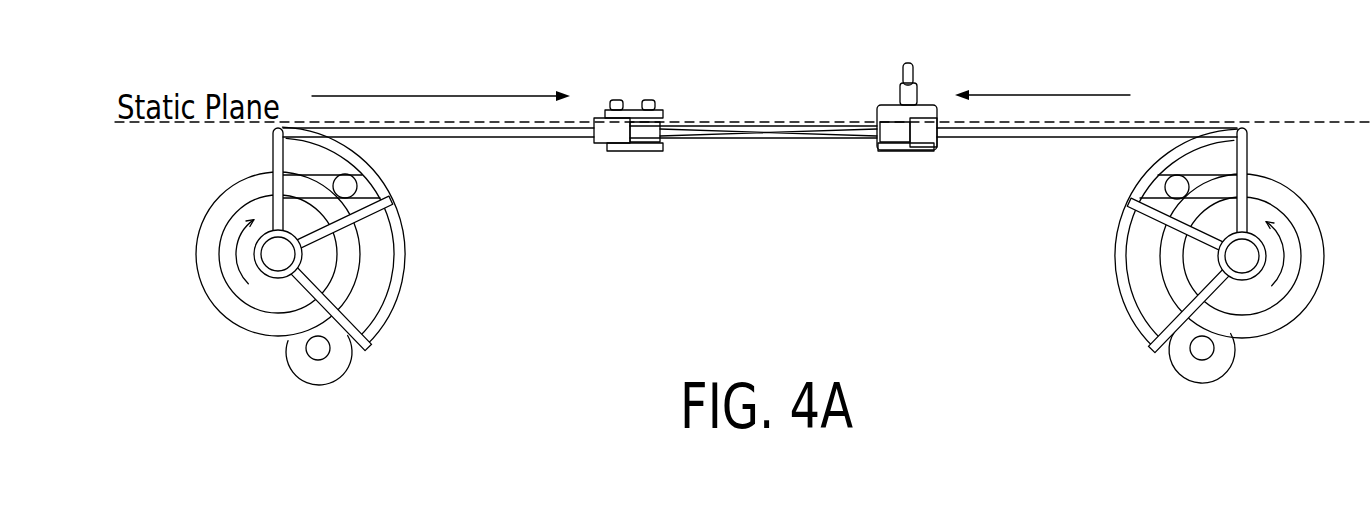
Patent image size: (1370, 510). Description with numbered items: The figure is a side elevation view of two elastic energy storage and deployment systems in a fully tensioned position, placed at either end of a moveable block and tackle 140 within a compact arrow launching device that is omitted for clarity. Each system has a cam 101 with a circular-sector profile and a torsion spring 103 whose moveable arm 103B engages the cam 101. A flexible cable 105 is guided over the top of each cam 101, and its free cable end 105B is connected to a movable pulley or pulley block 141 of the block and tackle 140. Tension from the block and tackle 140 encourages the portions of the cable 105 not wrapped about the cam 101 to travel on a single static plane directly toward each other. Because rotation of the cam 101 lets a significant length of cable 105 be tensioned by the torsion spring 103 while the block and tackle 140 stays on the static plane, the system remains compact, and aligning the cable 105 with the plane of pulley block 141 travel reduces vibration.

The cam 101 is at (405, 277).
The torsion spring 103 is at (223, 328).
The moveable arm 103B is at (348, 185).
The flexible cable 105 is at (500, 138).
The free cable end 105B is at (594, 140).
The block and tackle 140 is at (677, 82).
The pulley block 141 is at (627, 152).